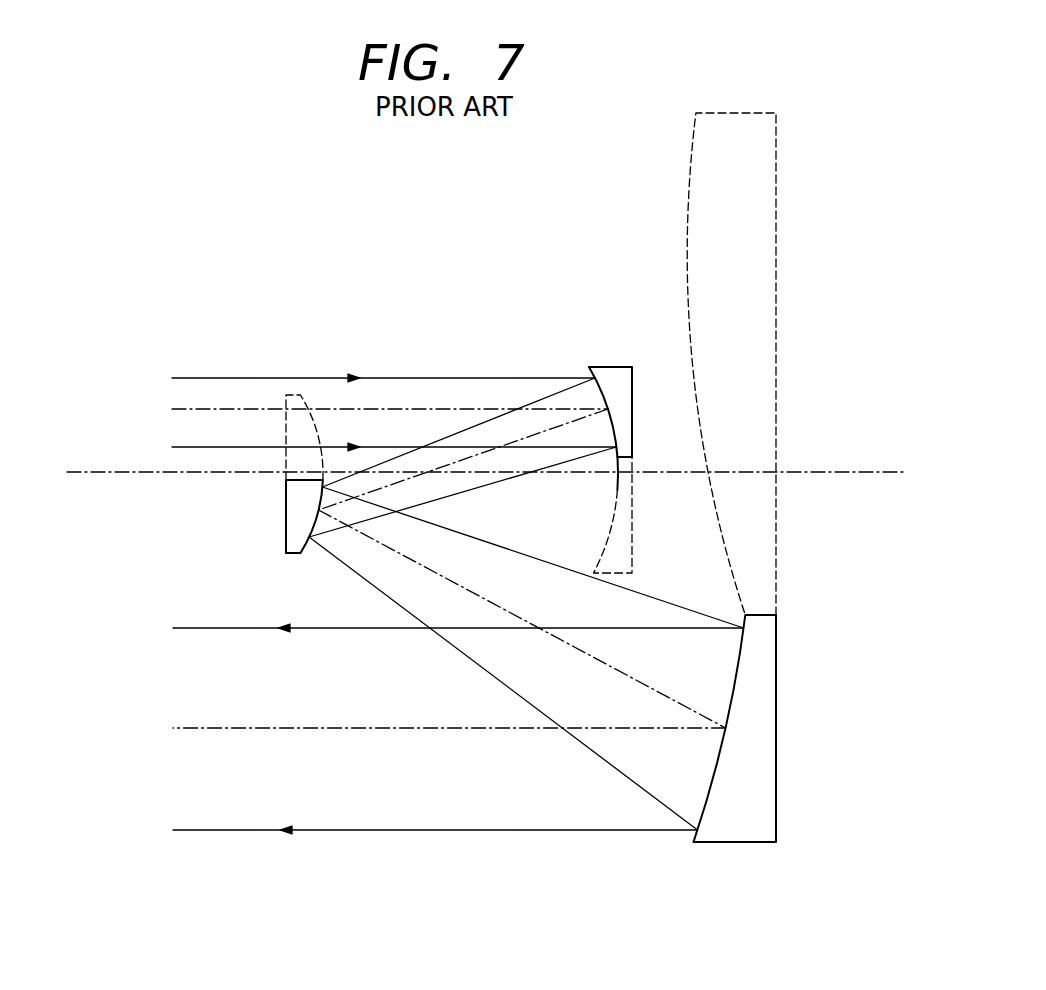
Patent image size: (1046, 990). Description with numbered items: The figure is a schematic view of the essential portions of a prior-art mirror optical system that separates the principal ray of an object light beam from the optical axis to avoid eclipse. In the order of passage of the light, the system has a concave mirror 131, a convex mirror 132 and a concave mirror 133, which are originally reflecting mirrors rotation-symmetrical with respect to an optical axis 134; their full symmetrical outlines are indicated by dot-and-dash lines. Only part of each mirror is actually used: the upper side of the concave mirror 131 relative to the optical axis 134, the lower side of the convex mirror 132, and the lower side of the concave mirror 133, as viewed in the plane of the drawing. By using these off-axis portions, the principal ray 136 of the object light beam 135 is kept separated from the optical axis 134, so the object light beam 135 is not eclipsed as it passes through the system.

The concave mirror 131 is at (615, 366).
The convex mirror 132 is at (299, 398).
The concave mirror 133 is at (765, 113).
The optical axis 134 is at (87, 474).
The object light beam 135 is at (188, 377).
The principal ray 136 is at (185, 409).